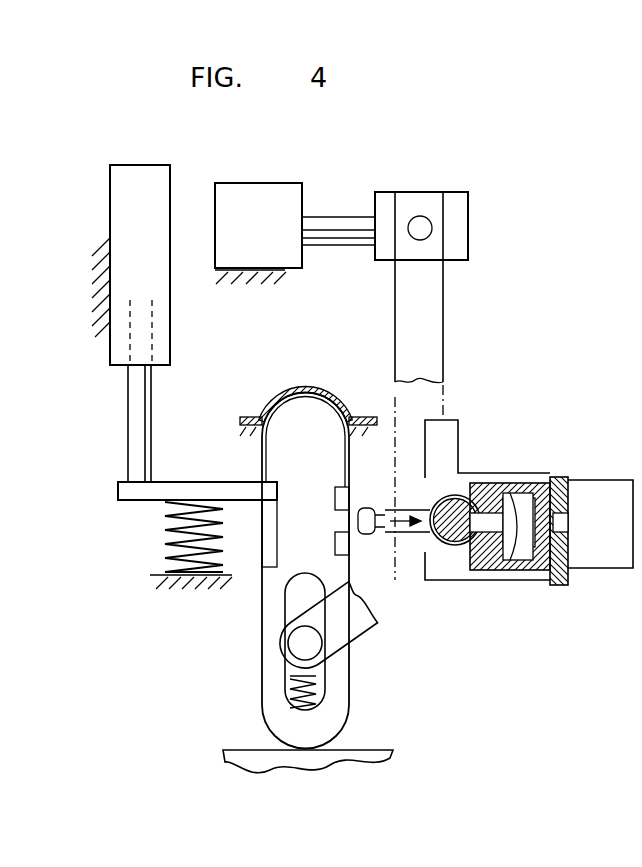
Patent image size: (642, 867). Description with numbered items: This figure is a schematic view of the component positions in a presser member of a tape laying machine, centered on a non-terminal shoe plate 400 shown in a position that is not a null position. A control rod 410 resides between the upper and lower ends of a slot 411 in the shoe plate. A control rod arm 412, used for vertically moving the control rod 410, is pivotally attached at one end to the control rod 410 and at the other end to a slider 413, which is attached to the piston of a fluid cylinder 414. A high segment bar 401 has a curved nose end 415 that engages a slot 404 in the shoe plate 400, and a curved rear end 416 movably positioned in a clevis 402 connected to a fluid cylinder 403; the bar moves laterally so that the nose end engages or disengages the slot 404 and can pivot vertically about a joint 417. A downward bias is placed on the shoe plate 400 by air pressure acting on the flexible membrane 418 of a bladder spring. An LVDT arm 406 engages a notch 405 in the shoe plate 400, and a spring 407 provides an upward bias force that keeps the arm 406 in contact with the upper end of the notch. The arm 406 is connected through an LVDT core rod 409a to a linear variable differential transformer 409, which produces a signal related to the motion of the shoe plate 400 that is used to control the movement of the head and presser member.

The non-terminal shoe plate 400 is at (350, 705).
The high segment bar 401 is at (405, 542).
The clevis 402 is at (520, 483).
The fluid cylinder 403 is at (612, 568).
The slot 404 is at (350, 508).
The notch 405 is at (262, 545).
The LVDT arm 406 is at (132, 503).
The spring 407 is at (160, 556).
The linear variable differential transformer (LVDT) 409 is at (108, 188).
The LVDT core rod 409a is at (128, 412).
The control rod 410 is at (300, 647).
The slot 411 is at (302, 598).
The control rod arm 412 is at (443, 315).
The slider 413 is at (468, 212).
The fluid cylinder 414 is at (272, 183).
The curved nose end 415 is at (366, 535).
The curved rear end 416 is at (512, 560).
The joint 417 is at (460, 495).
The flexible membrane 418 is at (308, 387).